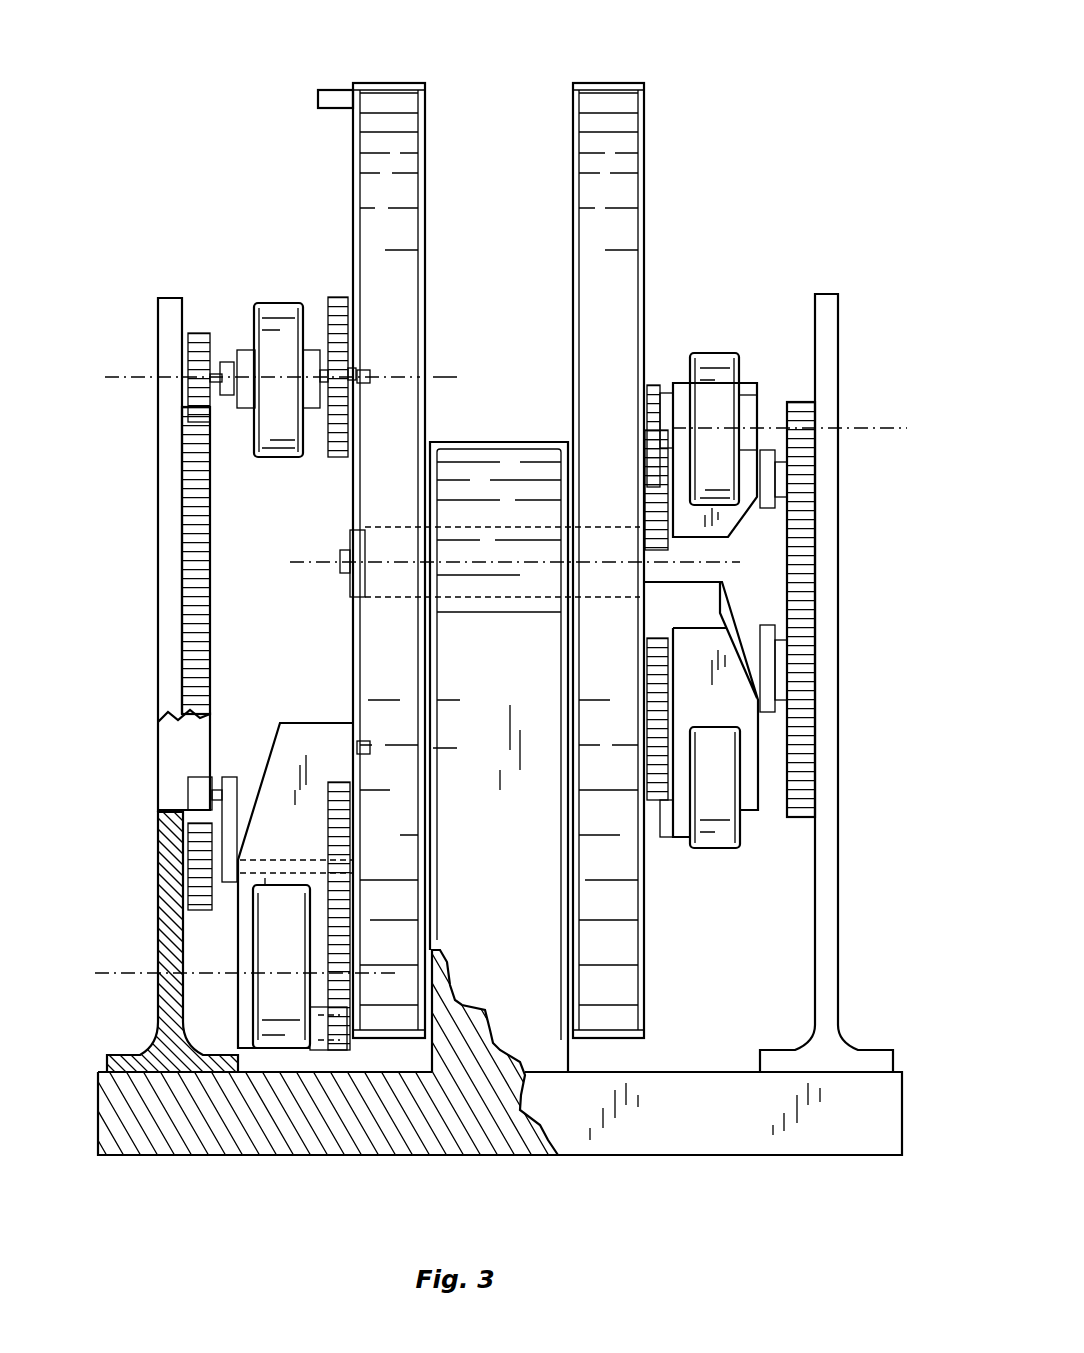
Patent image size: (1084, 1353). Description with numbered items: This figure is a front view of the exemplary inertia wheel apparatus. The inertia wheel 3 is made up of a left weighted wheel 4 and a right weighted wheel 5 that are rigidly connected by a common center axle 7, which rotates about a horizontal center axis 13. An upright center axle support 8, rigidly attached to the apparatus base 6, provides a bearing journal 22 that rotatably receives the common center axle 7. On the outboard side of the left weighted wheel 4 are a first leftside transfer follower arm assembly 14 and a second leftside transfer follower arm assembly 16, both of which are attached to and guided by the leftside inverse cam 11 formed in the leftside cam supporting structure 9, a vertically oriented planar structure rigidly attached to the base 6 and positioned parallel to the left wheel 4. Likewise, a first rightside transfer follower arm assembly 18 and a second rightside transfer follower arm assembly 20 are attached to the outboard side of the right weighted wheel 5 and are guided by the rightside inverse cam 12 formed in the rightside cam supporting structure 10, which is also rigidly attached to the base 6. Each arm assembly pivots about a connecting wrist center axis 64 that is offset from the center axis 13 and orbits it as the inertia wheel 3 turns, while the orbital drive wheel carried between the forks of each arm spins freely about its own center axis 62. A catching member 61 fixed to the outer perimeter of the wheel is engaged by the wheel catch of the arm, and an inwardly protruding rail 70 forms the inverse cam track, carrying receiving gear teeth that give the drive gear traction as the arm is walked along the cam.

The inertia wheel 3 is at (497, 95).
The left weighted wheel 4 is at (387, 82).
The right weighted wheel 5 is at (607, 82).
The apparatus base 6 is at (850, 1133).
The common center axle 7 is at (483, 540).
The center axle support 8 is at (543, 1043).
The leftside cam supporting structure 9 is at (168, 920).
The rightside cam supporting structure 10 is at (827, 995).
The leftside inverse cam 11 is at (170, 757).
The rightside inverse cam 12 is at (803, 792).
The center axis 13 is at (315, 558).
The first leftside transfer follower arm assembly 14 is at (302, 700).
The second leftside transfer follower arm assembly 16 is at (276, 285).
The first rightside transfer follower arm assembly 18 is at (724, 868).
The second rightside transfer follower arm assembly 20 is at (718, 330).
The bearing journal 22 is at (540, 525).
The catching member 61 is at (337, 90).
The center axis of orbital drive wheel 62 is at (122, 377).
The connecting wrist center axis 64 is at (445, 377).
The inwardly protruding rail 70 is at (185, 815).